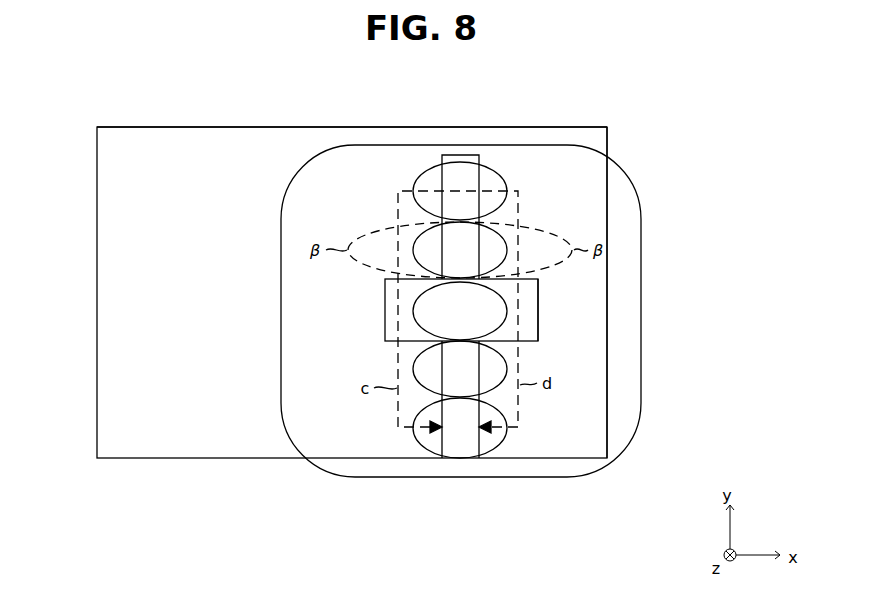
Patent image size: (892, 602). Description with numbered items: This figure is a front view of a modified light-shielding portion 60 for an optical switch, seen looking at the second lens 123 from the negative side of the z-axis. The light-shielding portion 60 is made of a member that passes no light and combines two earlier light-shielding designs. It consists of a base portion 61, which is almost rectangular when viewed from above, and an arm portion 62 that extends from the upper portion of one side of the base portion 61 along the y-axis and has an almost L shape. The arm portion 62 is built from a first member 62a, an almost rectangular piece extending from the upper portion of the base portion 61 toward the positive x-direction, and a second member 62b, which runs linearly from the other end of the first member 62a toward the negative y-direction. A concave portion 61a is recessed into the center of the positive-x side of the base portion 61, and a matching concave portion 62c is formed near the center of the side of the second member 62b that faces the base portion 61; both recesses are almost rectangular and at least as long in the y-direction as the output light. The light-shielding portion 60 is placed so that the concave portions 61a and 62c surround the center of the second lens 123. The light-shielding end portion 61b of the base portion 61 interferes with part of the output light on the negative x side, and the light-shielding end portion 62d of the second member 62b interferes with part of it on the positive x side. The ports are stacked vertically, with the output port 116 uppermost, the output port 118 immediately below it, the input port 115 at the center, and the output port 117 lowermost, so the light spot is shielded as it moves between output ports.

The light-shielding portion 60 is at (96, 298).
The base portion 61 is at (193, 126).
The arm portion 62 is at (546, 126).
The first member 62a is at (462, 126).
The second member 62b is at (608, 300).
The concave portion 62c is at (538, 312).
The light-shielding end portion 62d is at (480, 172).
The concave portion 61a is at (384, 312).
The light-shielding end portion 61b is at (441, 172).
The input port 115 is at (508, 305).
The output port 116 is at (508, 184).
The output port 117 is at (457, 459).
The output port 118 is at (500, 222).
The second lens 123 is at (632, 196).